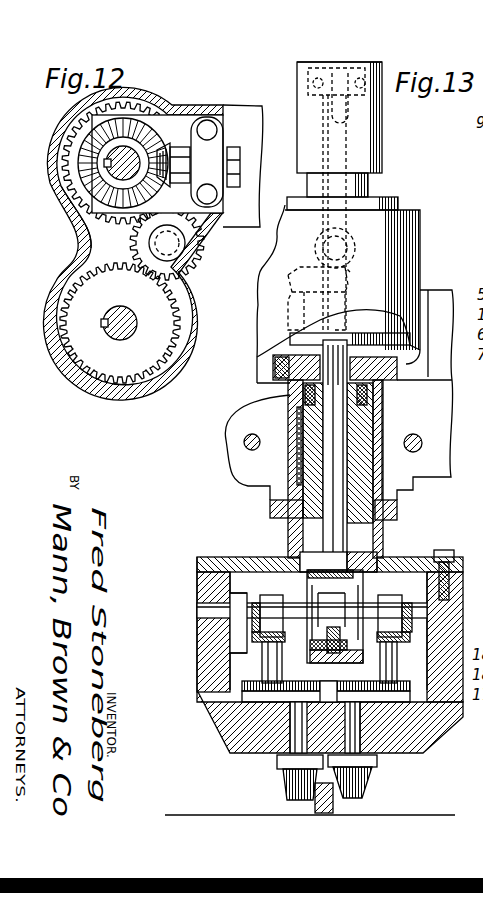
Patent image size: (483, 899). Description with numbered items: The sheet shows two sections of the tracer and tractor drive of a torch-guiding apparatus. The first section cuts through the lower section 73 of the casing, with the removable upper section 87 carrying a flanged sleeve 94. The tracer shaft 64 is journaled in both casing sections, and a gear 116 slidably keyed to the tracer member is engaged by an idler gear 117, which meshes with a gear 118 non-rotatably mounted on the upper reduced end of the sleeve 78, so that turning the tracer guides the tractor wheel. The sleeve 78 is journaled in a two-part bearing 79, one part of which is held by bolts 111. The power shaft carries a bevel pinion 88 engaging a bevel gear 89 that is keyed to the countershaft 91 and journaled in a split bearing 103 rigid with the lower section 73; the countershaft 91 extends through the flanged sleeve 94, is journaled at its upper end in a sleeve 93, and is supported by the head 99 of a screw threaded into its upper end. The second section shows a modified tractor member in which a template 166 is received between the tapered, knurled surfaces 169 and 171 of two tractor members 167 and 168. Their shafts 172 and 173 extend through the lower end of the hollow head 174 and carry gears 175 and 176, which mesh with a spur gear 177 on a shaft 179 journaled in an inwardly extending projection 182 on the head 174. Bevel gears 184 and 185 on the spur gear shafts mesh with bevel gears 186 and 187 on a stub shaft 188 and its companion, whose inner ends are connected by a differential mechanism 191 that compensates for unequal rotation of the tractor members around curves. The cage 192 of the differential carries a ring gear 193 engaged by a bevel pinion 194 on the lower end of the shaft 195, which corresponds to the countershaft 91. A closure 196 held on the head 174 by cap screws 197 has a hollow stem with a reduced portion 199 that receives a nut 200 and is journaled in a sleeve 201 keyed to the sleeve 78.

In FIG. 12, the shaft 64 is at (112, 340).
In FIG. 12, the lower section 73 is at (231, 118).
In FIG. 13, the sleeve 78 is at (380, 462).
In FIG. 13, the two-part bearing 79 is at (270, 432).
In FIG. 12, the upper section 87 is at (121, 397).
In FIG. 12, the bevel pinion 88 is at (172, 143).
In FIG. 13, the bevel pinion 88 is at (355, 245).
In FIG. 12, the bevel gear 89 is at (165, 140).
In FIG. 13, the bevel gear 89 is at (350, 272).
In FIG. 12, the countershaft 91 is at (110, 150).
In FIG. 13, the sleeve 93 is at (382, 125).
In FIG. 13, the flanged sleeve 94 is at (373, 180).
In FIG. 13, the head 99 is at (347, 65).
In FIG. 12, the split bearing 103 is at (150, 118).
In FIG. 13, the bolts 111 is at (243, 442).
In FIG. 12, the gear 116 is at (80, 280).
In FIG. 12, the idler gear 117 is at (130, 242).
In FIG. 12, the gear 118 is at (58, 192).
In FIG. 13, the template 166 is at (330, 807).
In FIG. 13, the tractor member 167 is at (278, 767).
In FIG. 13, the tractor member 168 is at (375, 767).
In FIG. 13, the tapered knurled end 169 is at (287, 792).
In FIG. 13, the tapered knurled end 171 is at (367, 787).
In FIG. 13, the shaft 172 is at (285, 738).
In FIG. 13, the shaft 173 is at (397, 717).
In FIG. 13, the hollow head 174 is at (186, 689).
In FIG. 13, the gear 175 is at (293, 735).
In FIG. 13, the gear 176 is at (400, 702).
In FIG. 13, the spur gear 177 is at (263, 700).
In FIG. 13, the shaft 179 is at (267, 668).
In FIG. 13, the inwardly extending projection 182 is at (257, 657).
In FIG. 13, the bevel gear 184 is at (270, 632).
In FIG. 13, the bevel gear 185 is at (385, 637).
In FIG. 13, the bevel gear 186 is at (253, 603).
In FIG. 13, the bevel gear 187 is at (377, 577).
In FIG. 13, the stub shaft 188 is at (207, 618).
In FIG. 13, the differential mechanism 191 is at (282, 562).
In FIG. 13, the cage 192 is at (345, 658).
In FIG. 13, the ring gear 193 is at (350, 567).
In FIG. 13, the bevel pinion 194 is at (353, 567).
In FIG. 13, the shaft 195 is at (327, 453).
In FIG. 13, the closure 196 is at (227, 560).
In FIG. 13, the cap screws 197 is at (443, 557).
In FIG. 13, the reduced portion 199 is at (308, 495).
In FIG. 13, the nut 200 is at (307, 393).
In FIG. 13, the sleeve 201 is at (367, 418).